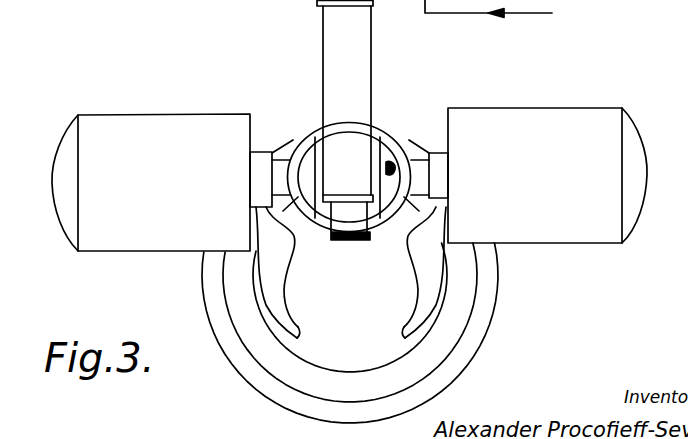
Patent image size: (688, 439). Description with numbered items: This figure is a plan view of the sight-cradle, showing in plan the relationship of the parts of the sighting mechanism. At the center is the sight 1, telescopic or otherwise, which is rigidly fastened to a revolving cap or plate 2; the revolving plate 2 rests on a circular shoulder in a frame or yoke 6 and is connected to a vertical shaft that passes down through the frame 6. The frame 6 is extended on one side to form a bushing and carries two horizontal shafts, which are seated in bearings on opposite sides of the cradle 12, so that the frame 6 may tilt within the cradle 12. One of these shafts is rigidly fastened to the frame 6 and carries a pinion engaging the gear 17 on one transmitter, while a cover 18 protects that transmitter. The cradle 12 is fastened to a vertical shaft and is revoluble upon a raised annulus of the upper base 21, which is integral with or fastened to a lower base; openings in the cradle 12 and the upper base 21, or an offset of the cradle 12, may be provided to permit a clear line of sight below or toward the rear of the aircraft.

The sight 1 is at (360, 78).
The revolving cap or plate 2 is at (386, 151).
The frame or yoke 6 is at (306, 137).
The cradle 12 is at (423, 280).
The gear on transmitter T-2 17 is at (138, 128).
The cover 18 is at (512, 115).
The upper base 21 is at (475, 343).